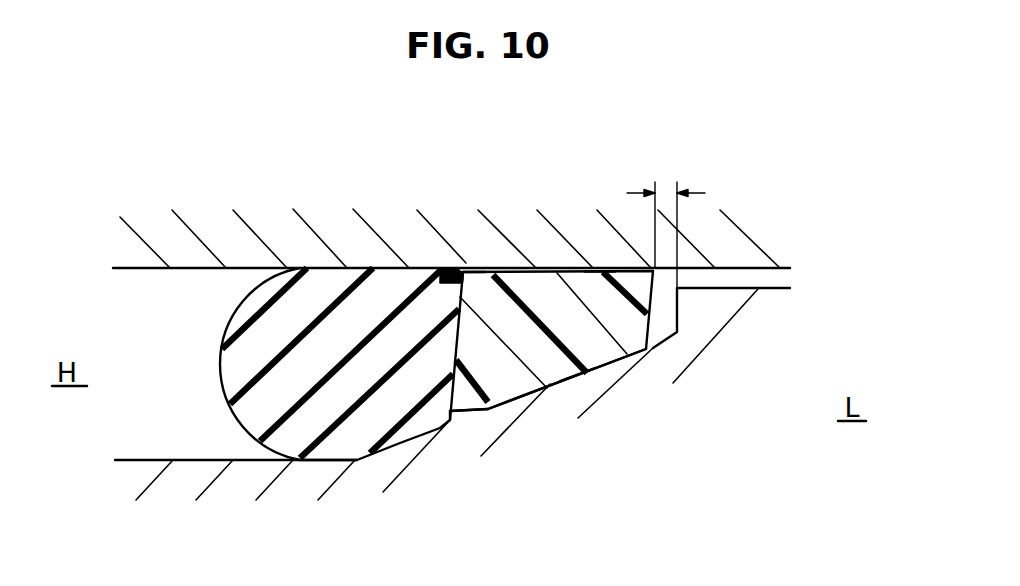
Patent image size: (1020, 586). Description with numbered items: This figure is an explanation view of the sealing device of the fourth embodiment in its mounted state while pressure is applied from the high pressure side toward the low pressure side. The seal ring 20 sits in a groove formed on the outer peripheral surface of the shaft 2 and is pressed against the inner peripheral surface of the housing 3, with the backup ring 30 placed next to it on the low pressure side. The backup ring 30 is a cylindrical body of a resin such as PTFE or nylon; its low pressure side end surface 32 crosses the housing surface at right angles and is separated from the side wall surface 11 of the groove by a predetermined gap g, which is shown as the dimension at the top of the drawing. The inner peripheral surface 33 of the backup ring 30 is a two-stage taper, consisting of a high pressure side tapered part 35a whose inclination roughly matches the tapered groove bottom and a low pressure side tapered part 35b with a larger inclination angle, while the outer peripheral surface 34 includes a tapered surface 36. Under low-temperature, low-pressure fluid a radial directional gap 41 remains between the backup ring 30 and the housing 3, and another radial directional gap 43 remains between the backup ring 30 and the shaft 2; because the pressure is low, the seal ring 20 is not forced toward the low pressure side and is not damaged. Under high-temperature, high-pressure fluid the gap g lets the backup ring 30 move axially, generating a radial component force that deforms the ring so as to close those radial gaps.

The shaft 2 is at (232, 465).
The housing 3 is at (241, 259).
The side wall surface 11 is at (676, 306).
The seal ring 20 is at (313, 423).
The backup ring 30 is at (622, 348).
The low pressure side end surface 32 is at (677, 330).
The inner peripheral surface 33 is at (577, 376).
The outer peripheral surface 34 is at (600, 268).
The high pressure side tapered part 35a is at (485, 410).
The low pressure side tapered part 35b is at (610, 357).
The tapered surface 36 is at (466, 274).
The radial directional gap 41 is at (463, 268).
The radial directional gap 43 is at (459, 412).
The gap g is at (666, 218).